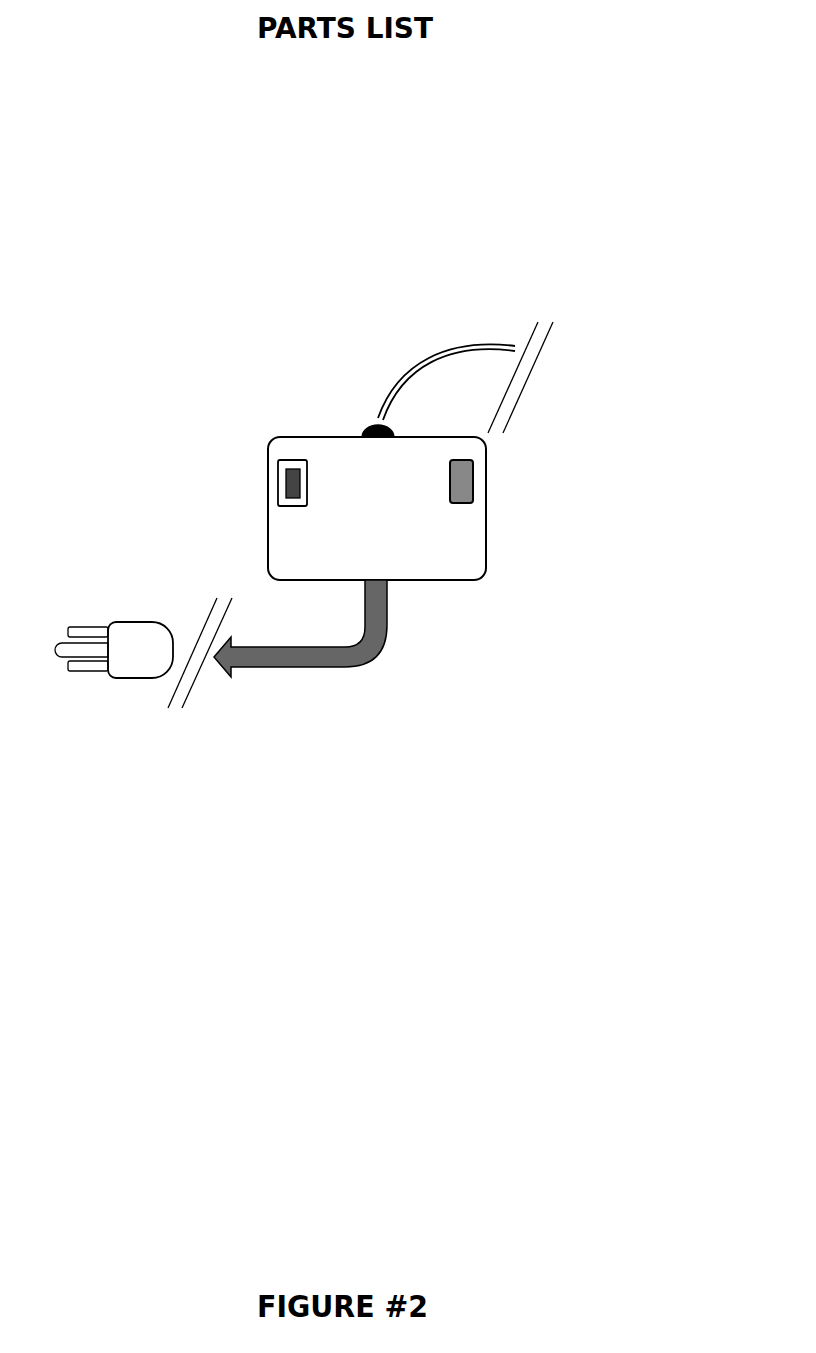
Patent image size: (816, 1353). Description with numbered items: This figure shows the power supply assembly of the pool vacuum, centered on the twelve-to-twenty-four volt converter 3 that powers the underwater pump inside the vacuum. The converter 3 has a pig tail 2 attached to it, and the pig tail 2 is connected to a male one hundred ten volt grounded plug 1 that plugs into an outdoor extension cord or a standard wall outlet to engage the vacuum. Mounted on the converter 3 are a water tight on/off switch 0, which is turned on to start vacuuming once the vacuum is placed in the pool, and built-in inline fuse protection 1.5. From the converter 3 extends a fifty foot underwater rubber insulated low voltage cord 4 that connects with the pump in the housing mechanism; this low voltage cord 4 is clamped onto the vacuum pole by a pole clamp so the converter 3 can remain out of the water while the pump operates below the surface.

The water tight on/off switch 0 is at (281, 460).
The male 110 volt grounded plug 1 is at (133, 626).
The inline fuse protection 1.5 is at (475, 480).
The pig tail 2 is at (300, 646).
The 12-24 volt converter 3 is at (298, 520).
The underwater rubber insulated low voltage cord 4 is at (476, 344).